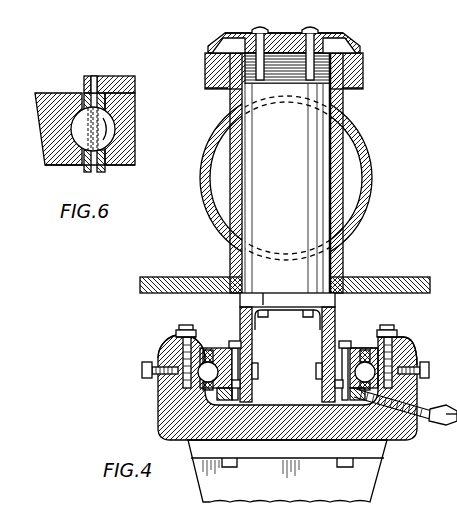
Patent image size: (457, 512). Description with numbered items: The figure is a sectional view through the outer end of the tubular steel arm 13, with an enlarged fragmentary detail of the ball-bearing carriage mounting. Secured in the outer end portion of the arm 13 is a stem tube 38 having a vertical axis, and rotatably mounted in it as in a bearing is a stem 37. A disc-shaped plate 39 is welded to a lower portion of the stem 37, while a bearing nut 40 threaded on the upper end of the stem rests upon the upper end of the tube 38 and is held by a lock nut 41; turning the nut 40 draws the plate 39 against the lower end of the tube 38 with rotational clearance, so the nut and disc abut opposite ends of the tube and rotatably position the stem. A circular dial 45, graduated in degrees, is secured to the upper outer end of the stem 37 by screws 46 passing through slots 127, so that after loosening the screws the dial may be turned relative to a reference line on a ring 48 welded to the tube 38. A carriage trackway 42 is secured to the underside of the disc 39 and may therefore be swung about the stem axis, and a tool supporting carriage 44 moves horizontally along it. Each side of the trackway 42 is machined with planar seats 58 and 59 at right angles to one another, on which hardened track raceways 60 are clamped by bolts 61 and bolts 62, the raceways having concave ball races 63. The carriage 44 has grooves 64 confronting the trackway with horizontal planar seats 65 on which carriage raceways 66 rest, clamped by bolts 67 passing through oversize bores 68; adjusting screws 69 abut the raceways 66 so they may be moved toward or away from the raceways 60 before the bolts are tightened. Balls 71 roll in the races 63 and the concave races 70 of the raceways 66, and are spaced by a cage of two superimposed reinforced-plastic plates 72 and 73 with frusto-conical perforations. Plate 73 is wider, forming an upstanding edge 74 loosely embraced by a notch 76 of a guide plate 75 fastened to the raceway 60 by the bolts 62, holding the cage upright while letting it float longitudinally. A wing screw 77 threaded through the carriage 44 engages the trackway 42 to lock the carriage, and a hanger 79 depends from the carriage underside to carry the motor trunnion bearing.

In FIG. 4, the arm 13 is at (370, 165).
In FIG. 4, the stem 37 is at (286, 188).
In FIG. 4, the stem tube 38 is at (344, 262).
In FIG. 4, the plate 39 is at (187, 278).
In FIG. 4, the bearing nut 40 is at (345, 69).
In FIG. 4, the lock nut 41 is at (355, 58).
In FIG. 4, the carriage trackway 42 is at (336, 318).
In FIG. 4, the tool supporting carriage 44 is at (410, 440).
In FIG. 4, the circular dial 45 is at (348, 40).
In FIG. 4, the screws 46 is at (262, 30).
In FIG. 4, the ring 48 is at (212, 89).
In FIG. 4, the seats 58 is at (241, 380).
In FIG. 4, the seats 59 is at (334, 401).
In FIG. 6, the track raceways 60 is at (133, 162).
In FIG. 4, the track raceways 60 is at (240, 352).
In FIG. 4, the bolts 61 is at (258, 370).
In FIG. 4, the bolts 62 is at (235, 341).
In FIG. 6, the concave ball races 63 is at (133, 139).
In FIG. 4, the grooves 64 is at (192, 385).
In FIG. 4, the horizontal planar seats 65 is at (178, 340).
In FIG. 6, the carriage raceways 66 is at (47, 166).
In FIG. 4, the carriage raceways 66 is at (185, 398).
In FIG. 4, the bolts 67 is at (188, 325).
In FIG. 4, the oversize bores 68 is at (200, 338).
In FIG. 4, the adjusting screws 69 is at (142, 370).
In FIG. 6, the concave races 70 is at (40, 140).
In FIG. 6, the balls 71 is at (112, 118).
In FIG. 4, the balls 71 is at (286, 370).
In FIG. 6, the plate 72 is at (87, 172).
In FIG. 6, the plate 73 is at (100, 172).
In FIG. 6, the upstanding edge 74 is at (102, 77).
In FIG. 6, the guide plate 75 is at (128, 81).
In FIG. 4, the guide plate 75 is at (360, 348).
In FIG. 6, the notch 76 is at (85, 95).
In FIG. 4, the wing screw 77 is at (443, 424).
In FIG. 4, the hanger 79 is at (372, 484).
In FIG. 4, the slots 127 is at (255, 30).